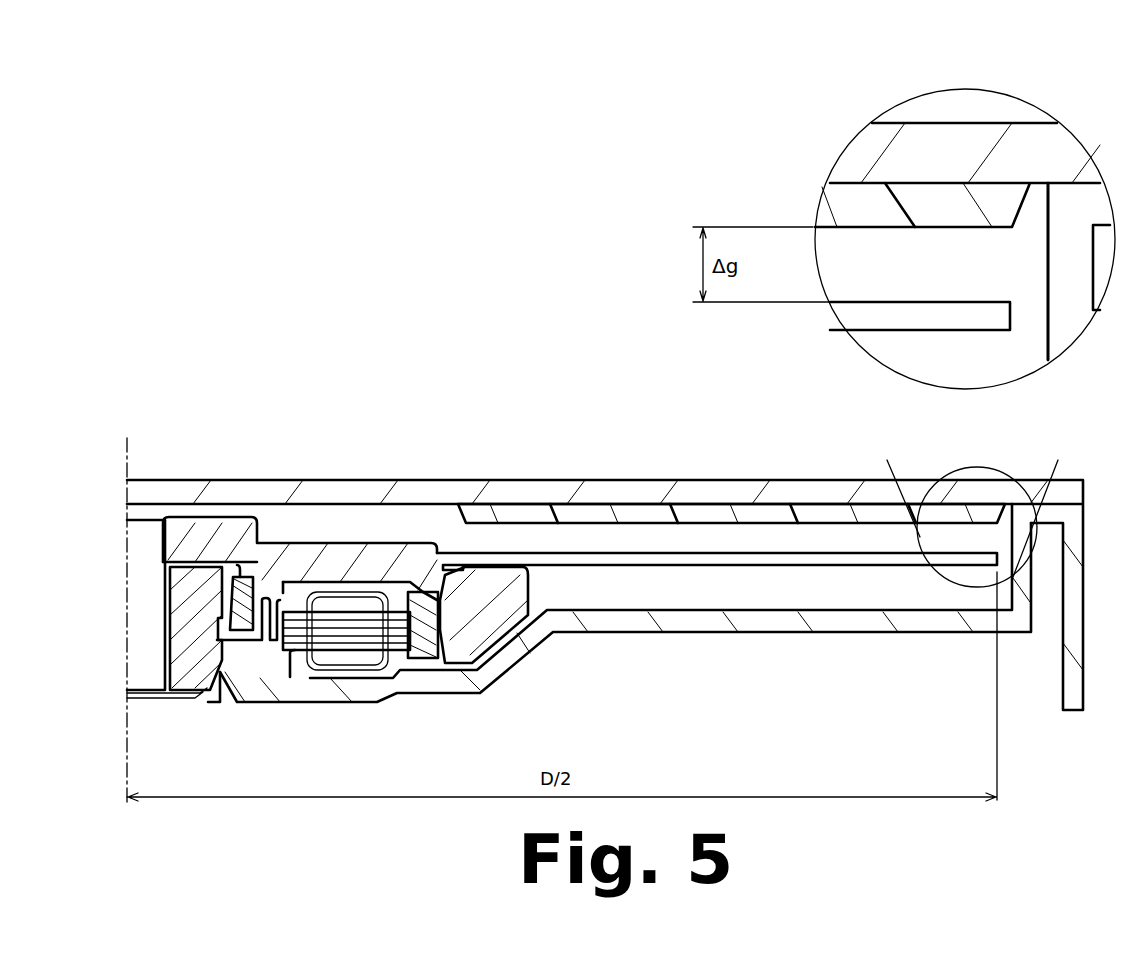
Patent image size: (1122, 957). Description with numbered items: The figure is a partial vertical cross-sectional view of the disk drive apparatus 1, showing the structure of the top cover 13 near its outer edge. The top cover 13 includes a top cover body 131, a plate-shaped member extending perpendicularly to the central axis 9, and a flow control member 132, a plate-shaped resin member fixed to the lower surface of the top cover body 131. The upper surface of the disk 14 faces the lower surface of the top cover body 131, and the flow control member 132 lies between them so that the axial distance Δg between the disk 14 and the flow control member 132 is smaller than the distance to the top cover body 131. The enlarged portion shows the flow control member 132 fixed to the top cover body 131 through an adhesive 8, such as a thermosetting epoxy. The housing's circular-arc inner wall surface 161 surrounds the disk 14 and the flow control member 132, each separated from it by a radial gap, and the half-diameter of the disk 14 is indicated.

The disk drive apparatus 1 is at (287, 330).
The adhesive 8 is at (941, 180).
The central axis 9 is at (126, 457).
The top cover 13 is at (605, 507).
The top cover body 131 is at (443, 487).
The flow control member 132 is at (638, 513).
The disk 14 is at (790, 558).
The inner wall surface 161 is at (1040, 238).